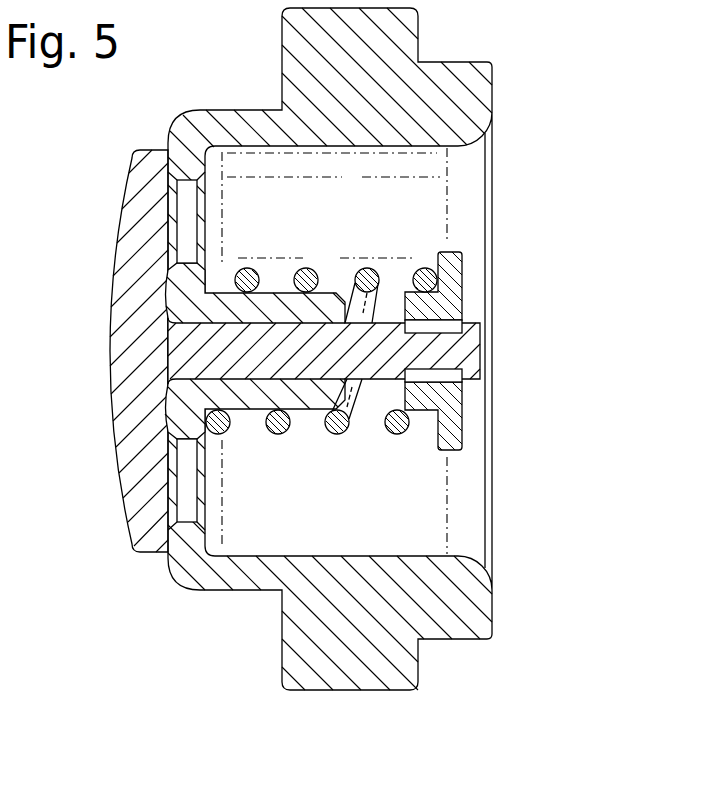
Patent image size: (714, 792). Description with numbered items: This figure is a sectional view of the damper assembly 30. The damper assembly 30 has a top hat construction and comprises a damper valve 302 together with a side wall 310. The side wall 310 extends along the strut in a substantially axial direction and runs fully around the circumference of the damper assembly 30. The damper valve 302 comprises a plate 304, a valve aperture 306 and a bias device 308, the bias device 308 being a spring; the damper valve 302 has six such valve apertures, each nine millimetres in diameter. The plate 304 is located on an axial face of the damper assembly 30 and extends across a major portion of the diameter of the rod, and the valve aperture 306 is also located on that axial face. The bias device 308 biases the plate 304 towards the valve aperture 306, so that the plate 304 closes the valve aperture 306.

The damper assembly 30 is at (252, 664).
The damper valve 302 is at (317, 352).
The plate 304 is at (145, 441).
The valve aperture 306 is at (187, 212).
The bias device 308 is at (362, 275).
The side wall 310 is at (232, 125).